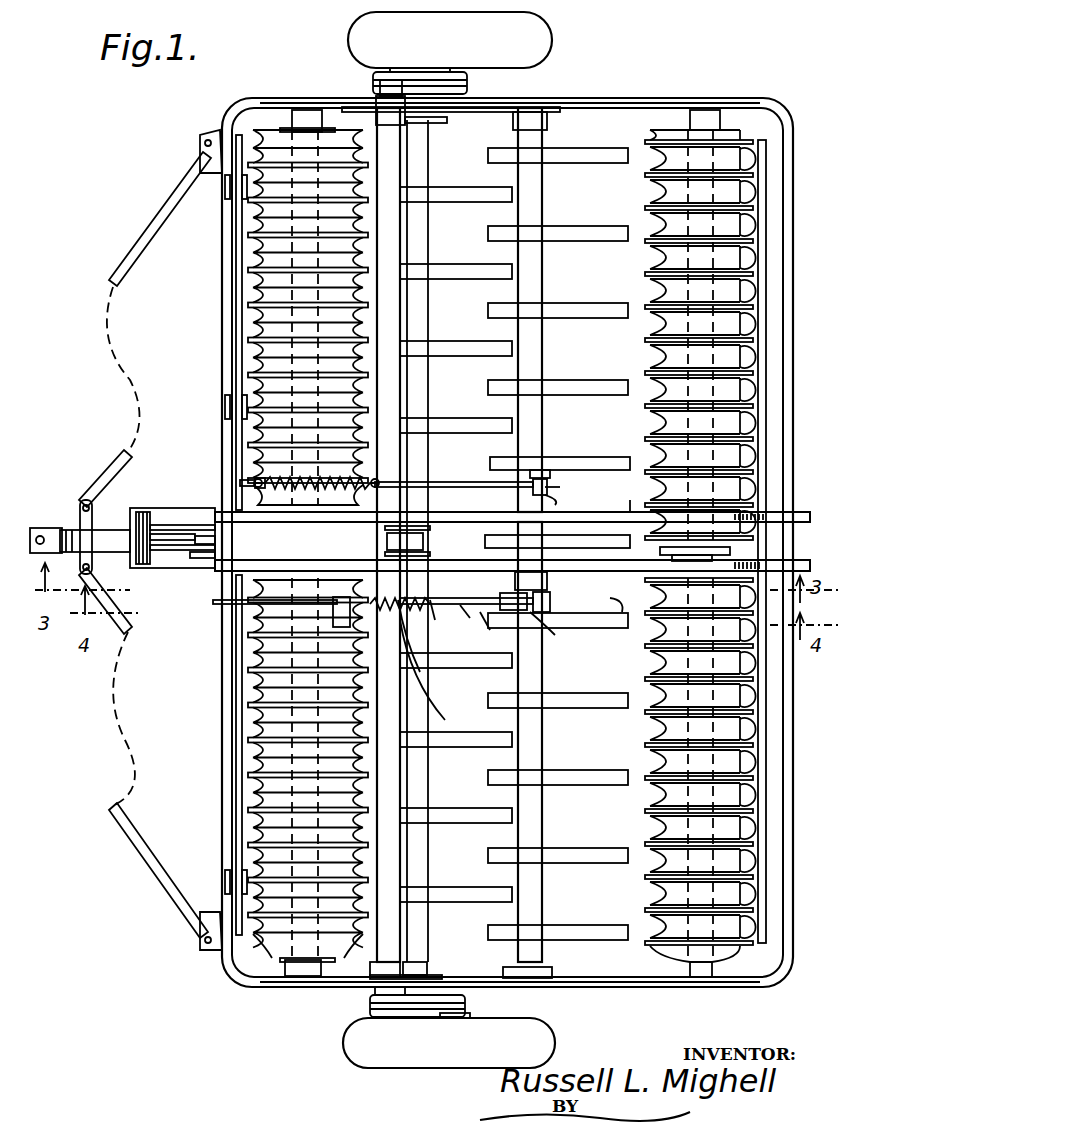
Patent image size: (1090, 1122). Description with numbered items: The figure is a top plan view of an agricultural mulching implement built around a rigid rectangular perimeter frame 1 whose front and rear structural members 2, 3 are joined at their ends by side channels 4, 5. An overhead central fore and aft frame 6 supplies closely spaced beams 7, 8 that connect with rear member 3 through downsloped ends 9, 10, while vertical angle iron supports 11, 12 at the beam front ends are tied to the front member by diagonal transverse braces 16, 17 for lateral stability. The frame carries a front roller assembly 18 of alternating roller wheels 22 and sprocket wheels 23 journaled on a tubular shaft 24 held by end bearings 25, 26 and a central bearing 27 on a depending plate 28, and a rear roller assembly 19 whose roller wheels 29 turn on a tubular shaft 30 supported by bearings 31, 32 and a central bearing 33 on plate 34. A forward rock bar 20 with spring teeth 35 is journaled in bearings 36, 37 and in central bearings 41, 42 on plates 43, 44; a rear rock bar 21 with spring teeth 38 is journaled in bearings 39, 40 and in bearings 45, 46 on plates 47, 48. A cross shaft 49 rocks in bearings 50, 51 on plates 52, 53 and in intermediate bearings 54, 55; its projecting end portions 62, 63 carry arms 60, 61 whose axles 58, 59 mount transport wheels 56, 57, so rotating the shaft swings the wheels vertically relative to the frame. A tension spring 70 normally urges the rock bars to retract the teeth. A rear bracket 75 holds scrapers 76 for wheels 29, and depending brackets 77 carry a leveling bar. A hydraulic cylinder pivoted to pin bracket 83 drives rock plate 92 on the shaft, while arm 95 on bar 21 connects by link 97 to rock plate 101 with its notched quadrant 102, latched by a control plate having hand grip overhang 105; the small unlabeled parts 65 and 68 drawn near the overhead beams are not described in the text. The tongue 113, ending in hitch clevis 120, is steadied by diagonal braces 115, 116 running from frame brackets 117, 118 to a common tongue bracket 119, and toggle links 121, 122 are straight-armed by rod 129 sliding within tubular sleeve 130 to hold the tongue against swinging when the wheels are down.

The perimeter frame 1 is at (628, 98).
The front structural member 2 is at (236, 302).
The rear structural member 3 is at (782, 340).
The side channel 4 is at (335, 100).
The side channel 5 is at (630, 985).
The overhead central fore and aft frame 6 is at (605, 470).
The beam 7 is at (633, 510).
The beam 8 is at (614, 601).
The downsloped end 9 is at (770, 514).
The downsloped end 10 is at (770, 566).
The angle iron support 11 is at (213, 545).
The angle iron support 12 is at (225, 562).
The transverse brace 16 is at (236, 408).
The transverse brace 17 is at (236, 652).
The front roller assembly 18 is at (262, 252).
The rear roller assembly 19 is at (655, 288).
The rock bar 20 is at (428, 296).
The rock bar 21 is at (545, 337).
The roller wheel 22 is at (262, 322).
The sprocket wheel 23 is at (262, 218).
The tubular shaft 24 is at (288, 130).
The end bearing 25 is at (300, 110).
The end bearing 26 is at (295, 978).
The central bearing 27 is at (218, 560).
The plate 28 is at (258, 482).
The roller wheel 29 is at (665, 360).
The tubular shaft 30 is at (655, 893).
The bearing 31 is at (705, 110).
The bearing 32 is at (708, 978).
The central bearing 33 is at (660, 550).
The plate 34 is at (675, 561).
The spring teeth 35 is at (475, 264).
The bearing 36 is at (440, 123).
The bearing 37 is at (415, 965).
The spring teeth 38 is at (580, 230).
The bearing 39 is at (545, 108).
The bearing 40 is at (540, 978).
The central bearing 41 is at (430, 552).
The central bearing 42 is at (470, 618).
The plate 43 is at (415, 527).
The plate 44 is at (442, 616).
The bearing 45 is at (552, 478).
The bearing 46 is at (550, 598).
The plate 47 is at (552, 500).
The plate 48 is at (548, 578).
The cross shaft 49 is at (400, 160).
The bearing 50 is at (378, 112).
The bearing 51 is at (385, 962).
The plate 52 is at (455, 112).
The plate 53 is at (440, 977).
The intermediate bearing 54 is at (405, 533).
The intermediate bearing 55 is at (410, 610).
The transport wheel 56 is at (545, 36).
The transport wheel 57 is at (368, 1068).
The axle 58 is at (455, 75).
The axle 59 is at (465, 1013).
The arm 60 is at (432, 72).
The arm 61 is at (410, 1017).
The projecting end portion 62 is at (390, 82).
The projecting end portion 63 is at (375, 993).
The pin 65 is at (552, 485).
The rod 68 is at (492, 482).
The tension spring 70 is at (242, 482).
The rear bracket 75 is at (770, 205).
The scraper 76 is at (755, 158).
The depending bracket 77 is at (225, 185).
The pin bracket 83 is at (142, 514).
The rock plate 92 is at (480, 590).
The arm 95 is at (554, 633).
The link 97 is at (496, 632).
The rock plate 101 is at (432, 645).
The notched quadrant 102 is at (470, 730).
The hand grip overhang 105 is at (260, 604).
The tongue 113 is at (105, 528).
The diagonal stabilizing brace 115 is at (150, 238).
The diagonal stabilizing brace 116 is at (110, 640).
The frame bracket 117 is at (205, 140).
The frame bracket 118 is at (198, 945).
The tongue bracket 119 is at (82, 500).
The hitch clevis 120 is at (48, 528).
The toggle link 121 is at (175, 540).
The toggle link 122 is at (205, 548).
The rod 129 is at (188, 525).
The tubular sleeve 130 is at (320, 478).